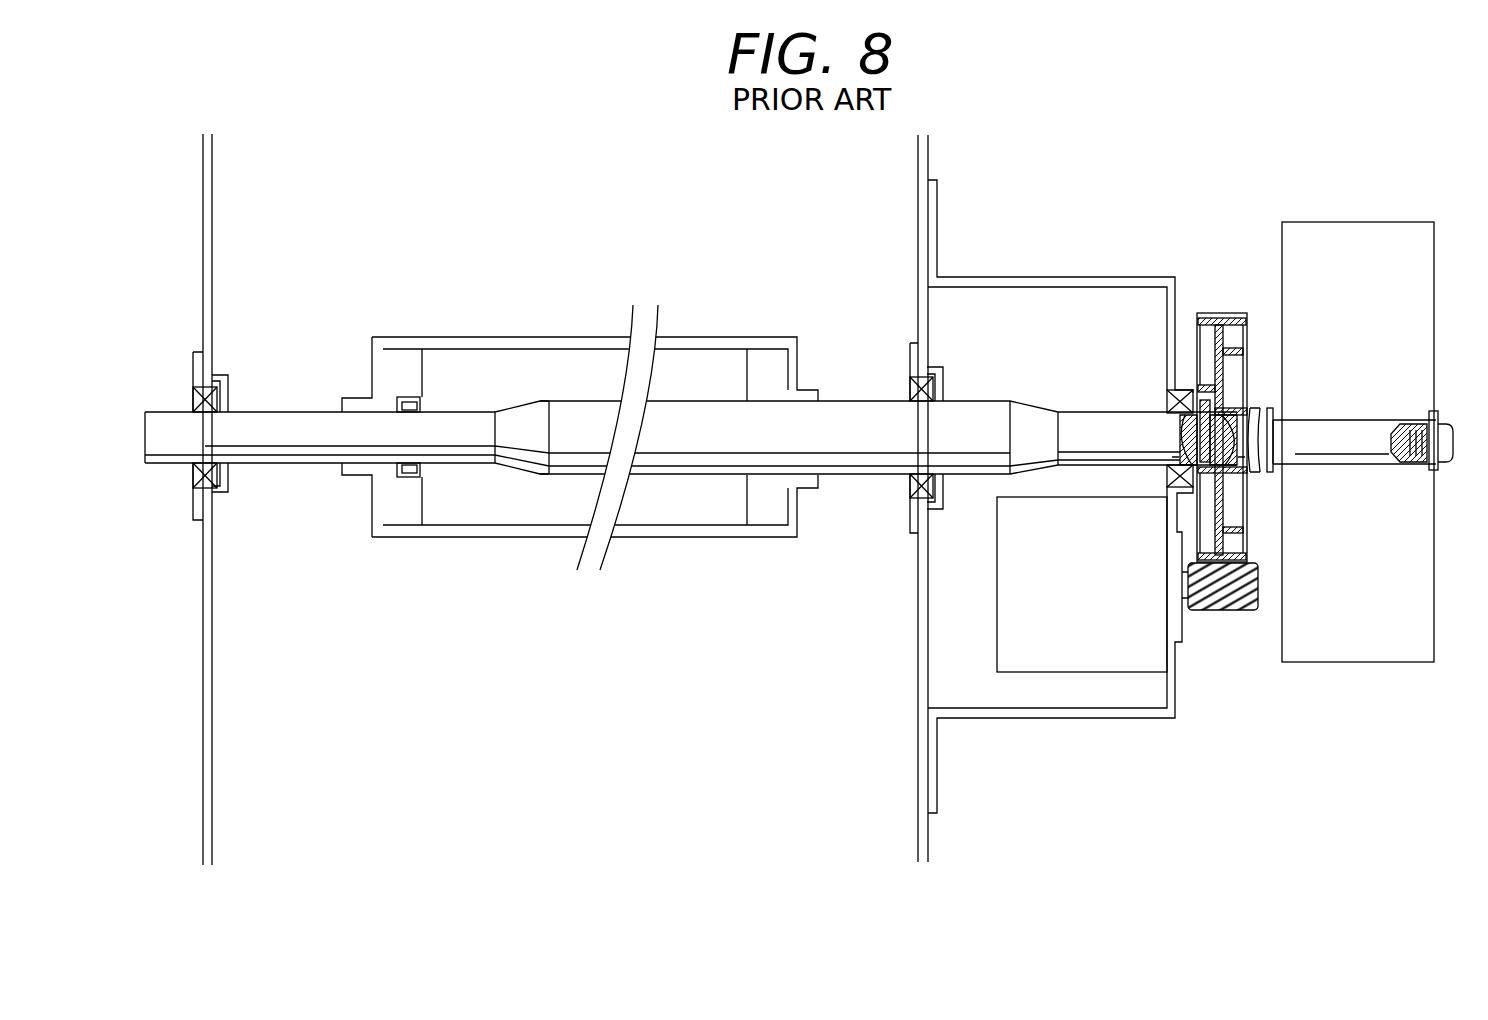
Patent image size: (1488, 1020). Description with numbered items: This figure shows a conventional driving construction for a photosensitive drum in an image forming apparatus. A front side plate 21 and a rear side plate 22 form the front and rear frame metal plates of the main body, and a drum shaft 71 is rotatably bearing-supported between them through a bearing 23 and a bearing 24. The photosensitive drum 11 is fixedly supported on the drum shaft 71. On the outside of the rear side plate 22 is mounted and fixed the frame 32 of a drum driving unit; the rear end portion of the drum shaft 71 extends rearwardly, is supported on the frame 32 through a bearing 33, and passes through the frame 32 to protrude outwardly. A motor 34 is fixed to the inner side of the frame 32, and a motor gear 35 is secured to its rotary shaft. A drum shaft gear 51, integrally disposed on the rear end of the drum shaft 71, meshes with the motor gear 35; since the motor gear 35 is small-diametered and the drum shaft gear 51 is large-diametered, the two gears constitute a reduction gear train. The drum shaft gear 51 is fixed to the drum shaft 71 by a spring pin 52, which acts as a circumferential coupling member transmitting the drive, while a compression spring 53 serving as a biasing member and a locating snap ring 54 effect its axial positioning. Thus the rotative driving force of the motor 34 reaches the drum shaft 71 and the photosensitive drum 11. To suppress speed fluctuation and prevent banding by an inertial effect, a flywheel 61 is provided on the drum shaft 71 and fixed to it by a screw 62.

The photosensitive drum 11 is at (500, 537).
The front side plate 21 is at (208, 197).
The rear side plate 22 is at (918, 255).
The bearing 23 is at (228, 487).
The bearing 24 is at (906, 497).
The frame 32 is at (1075, 277).
The bearing 33 is at (1165, 486).
The motor 34 is at (1098, 633).
The motor gear 35 is at (1220, 613).
The drum shaft gear 51 is at (1200, 313).
The spring pin 52 is at (1178, 422).
The compression spring 53 is at (1266, 472).
The locating snap ring 54 is at (1276, 470).
The flywheel 61 is at (1346, 243).
The screw 62 is at (1453, 428).
The drum shaft 71 is at (977, 420).